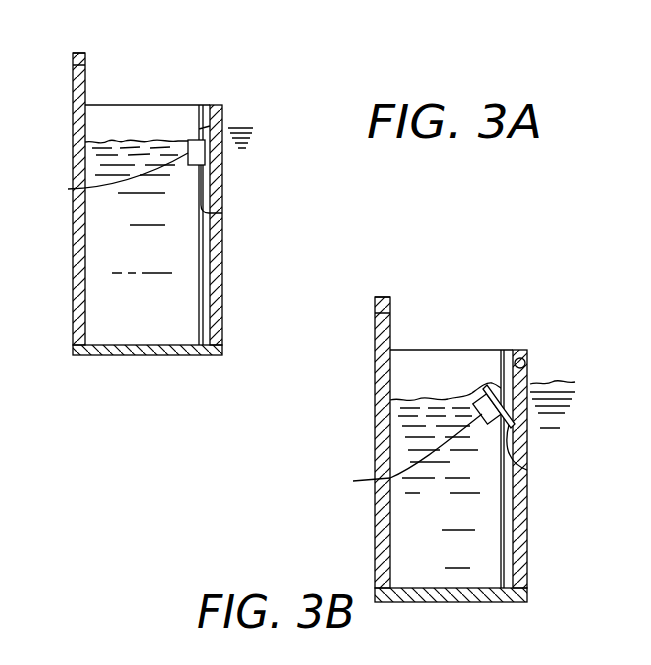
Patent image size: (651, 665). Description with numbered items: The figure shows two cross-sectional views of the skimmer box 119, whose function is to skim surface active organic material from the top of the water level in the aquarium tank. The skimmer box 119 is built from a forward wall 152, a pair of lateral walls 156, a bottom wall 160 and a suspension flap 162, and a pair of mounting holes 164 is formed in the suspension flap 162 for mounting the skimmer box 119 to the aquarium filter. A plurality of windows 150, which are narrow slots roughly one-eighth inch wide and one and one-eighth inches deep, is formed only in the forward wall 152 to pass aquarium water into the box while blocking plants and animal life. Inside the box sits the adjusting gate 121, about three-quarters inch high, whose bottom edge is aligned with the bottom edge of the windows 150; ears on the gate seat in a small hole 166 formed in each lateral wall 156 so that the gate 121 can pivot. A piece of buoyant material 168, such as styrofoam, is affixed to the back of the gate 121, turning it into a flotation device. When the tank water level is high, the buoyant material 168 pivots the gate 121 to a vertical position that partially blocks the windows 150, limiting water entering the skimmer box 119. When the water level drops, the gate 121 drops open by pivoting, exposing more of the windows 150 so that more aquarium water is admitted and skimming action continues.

In FIG. 3A, the skimmer box 119 is at (73, 285).
In FIG. 3B, the skimmer box 119 is at (375, 415).
In FIG. 3A, the adjusting gate 121 is at (222, 160).
In FIG. 3B, the adjusting gate 121 is at (506, 408).
In FIG. 3A, the plurality of windows 150 is at (213, 123).
In FIG. 3B, the plurality of windows 150 is at (527, 367).
In FIG. 3A, the forward wall 152 is at (222, 271).
In FIG. 3B, the forward wall 152 is at (527, 560).
In FIG. 3A, the lateral wall 156 is at (178, 308).
In FIG. 3B, the lateral wall 156 is at (480, 513).
In FIG. 3A, the bottom wall 160 is at (142, 355).
In FIG. 3B, the bottom wall 160 is at (470, 602).
In FIG. 3A, the suspension flap 162 is at (73, 97).
In FIG. 3B, the suspension flap 162 is at (375, 333).
In FIG. 3A, the mounting holes 164 is at (143, 48).
In FIG. 3B, the mounting holes 164 is at (390, 313).
In FIG. 3A, the small hole 166 is at (222, 213).
In FIG. 3B, the small hole 166 is at (527, 470).
In FIG. 3A, the buoyant material 168 is at (107, 181).
In FIG. 3B, the buoyant material 168 is at (386, 456).